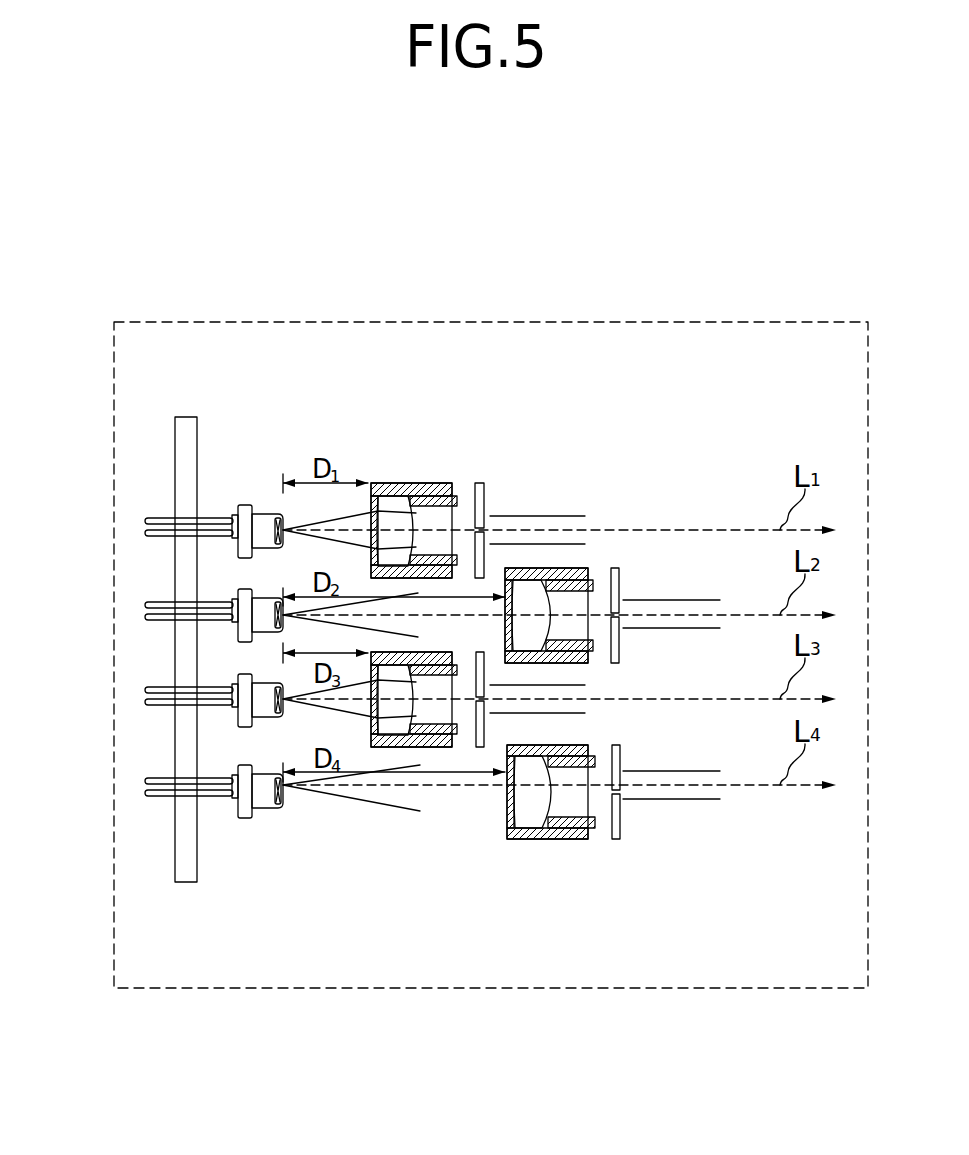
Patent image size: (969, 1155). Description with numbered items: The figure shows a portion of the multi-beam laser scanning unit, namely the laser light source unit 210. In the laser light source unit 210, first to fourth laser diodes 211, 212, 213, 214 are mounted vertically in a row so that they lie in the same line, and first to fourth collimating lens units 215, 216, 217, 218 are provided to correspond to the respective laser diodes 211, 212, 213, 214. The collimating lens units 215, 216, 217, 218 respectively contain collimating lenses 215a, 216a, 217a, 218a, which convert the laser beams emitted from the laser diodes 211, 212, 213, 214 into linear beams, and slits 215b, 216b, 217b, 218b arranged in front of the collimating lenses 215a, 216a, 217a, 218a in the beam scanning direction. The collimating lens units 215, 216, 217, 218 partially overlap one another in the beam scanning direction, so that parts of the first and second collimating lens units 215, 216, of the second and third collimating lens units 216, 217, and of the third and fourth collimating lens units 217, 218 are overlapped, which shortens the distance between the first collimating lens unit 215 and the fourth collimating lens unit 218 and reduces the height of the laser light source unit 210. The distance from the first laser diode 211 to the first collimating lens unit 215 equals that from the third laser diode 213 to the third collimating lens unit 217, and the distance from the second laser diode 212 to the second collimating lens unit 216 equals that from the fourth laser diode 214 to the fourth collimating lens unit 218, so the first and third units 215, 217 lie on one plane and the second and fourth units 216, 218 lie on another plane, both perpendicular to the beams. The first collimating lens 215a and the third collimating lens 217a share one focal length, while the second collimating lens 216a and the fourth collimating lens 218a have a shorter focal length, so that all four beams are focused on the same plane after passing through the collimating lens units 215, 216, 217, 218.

The laser light source unit 210 is at (825, 264).
The first laser diode 211 is at (262, 512).
The second laser diode 212 is at (262, 596).
The third laser diode 213 is at (262, 681).
The fourth laser diode 214 is at (262, 772).
The first collimating lens unit 215 is at (547, 393).
The first collimating lens 215a is at (393, 503).
The slit 215b is at (484, 520).
The second collimating lens unit 216 is at (710, 465).
The second collimating lens 216a is at (531, 595).
The slit 216b is at (622, 606).
The third collimating lens unit 217 is at (450, 885).
The third collimating lens 217a is at (388, 725).
The slit 217b is at (477, 708).
The fourth collimating lens unit 218 is at (705, 930).
The fourth collimating lens 218a is at (530, 818).
The slit 218b is at (620, 800).